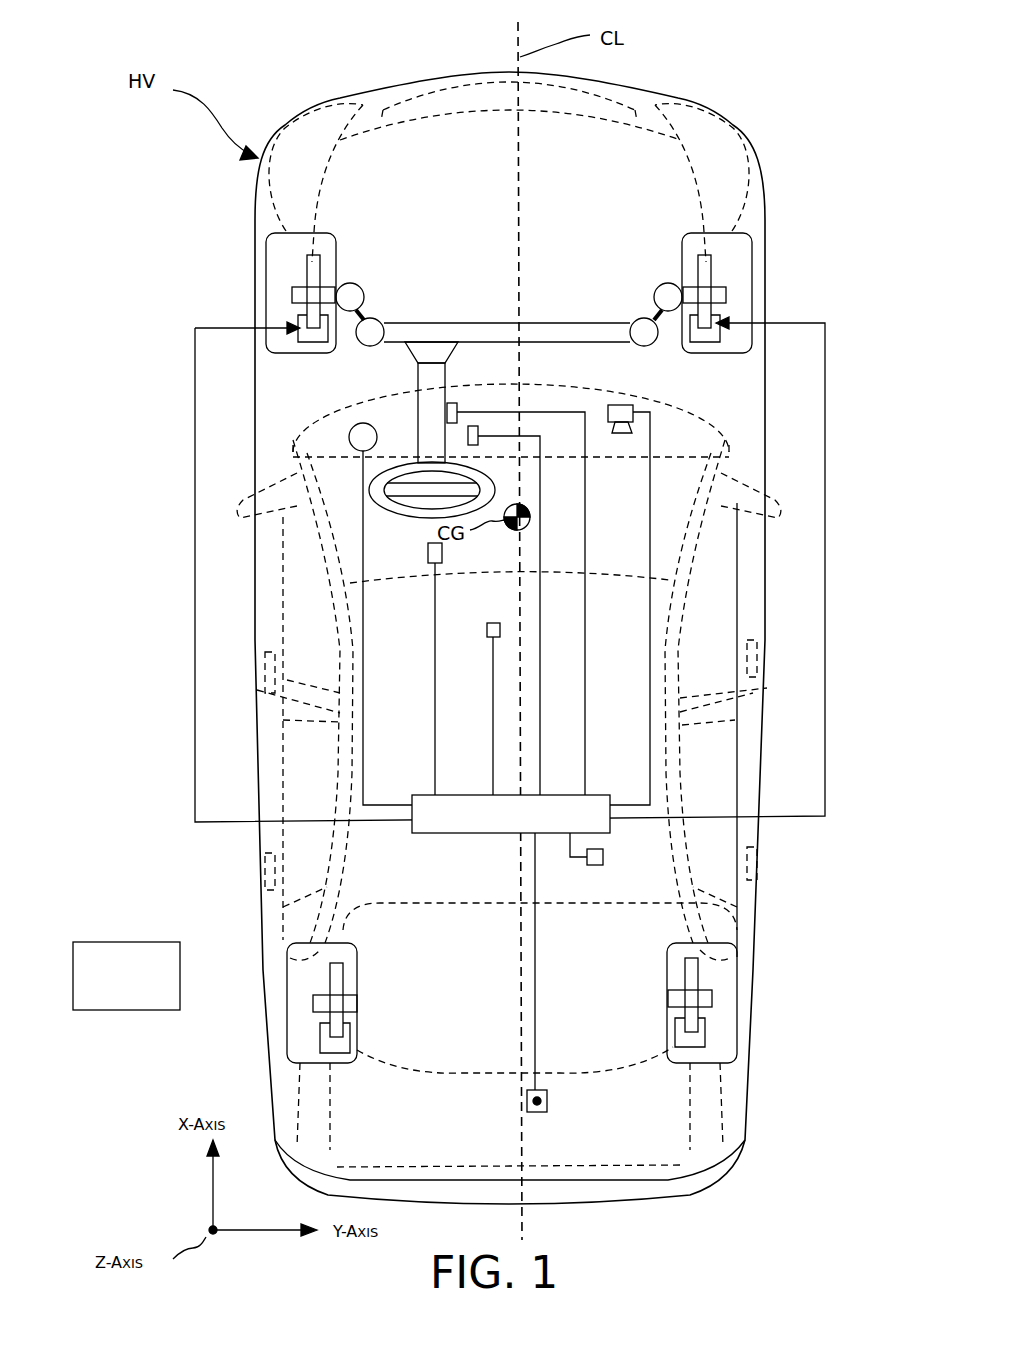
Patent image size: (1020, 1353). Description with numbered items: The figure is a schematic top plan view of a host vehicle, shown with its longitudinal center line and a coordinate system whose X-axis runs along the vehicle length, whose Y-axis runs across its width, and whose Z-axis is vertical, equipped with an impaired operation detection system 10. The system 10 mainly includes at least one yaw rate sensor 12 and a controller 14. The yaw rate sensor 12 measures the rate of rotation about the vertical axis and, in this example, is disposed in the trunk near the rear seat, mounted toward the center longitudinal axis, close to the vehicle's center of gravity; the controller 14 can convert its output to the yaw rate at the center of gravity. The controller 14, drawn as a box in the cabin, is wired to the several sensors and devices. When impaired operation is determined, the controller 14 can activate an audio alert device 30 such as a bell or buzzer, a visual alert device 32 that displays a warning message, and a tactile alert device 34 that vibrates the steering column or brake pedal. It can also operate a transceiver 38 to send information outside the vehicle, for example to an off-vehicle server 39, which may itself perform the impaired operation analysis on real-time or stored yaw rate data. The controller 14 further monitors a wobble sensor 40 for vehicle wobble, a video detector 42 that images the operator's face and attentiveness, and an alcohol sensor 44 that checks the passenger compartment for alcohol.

The impaired operation detection system 10 is at (300, 789).
The yaw rate sensor 12 is at (548, 1101).
The controller 14 is at (413, 835).
The audio alert device 30 is at (628, 405).
The visual alert device 32 is at (349, 429).
The tactile alert device 34 is at (457, 404).
The transceiver 38 is at (487, 625).
The server 39 is at (118, 1010).
The wobble sensor 40 is at (597, 866).
The video detector 42 is at (478, 426).
The alcohol sensor 44 is at (442, 553).